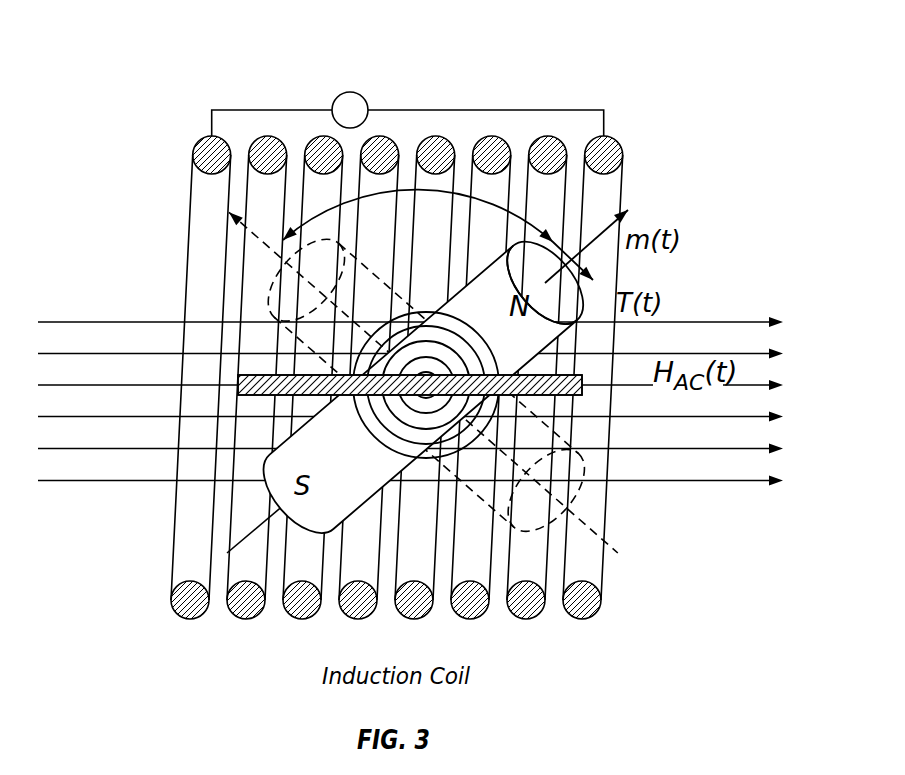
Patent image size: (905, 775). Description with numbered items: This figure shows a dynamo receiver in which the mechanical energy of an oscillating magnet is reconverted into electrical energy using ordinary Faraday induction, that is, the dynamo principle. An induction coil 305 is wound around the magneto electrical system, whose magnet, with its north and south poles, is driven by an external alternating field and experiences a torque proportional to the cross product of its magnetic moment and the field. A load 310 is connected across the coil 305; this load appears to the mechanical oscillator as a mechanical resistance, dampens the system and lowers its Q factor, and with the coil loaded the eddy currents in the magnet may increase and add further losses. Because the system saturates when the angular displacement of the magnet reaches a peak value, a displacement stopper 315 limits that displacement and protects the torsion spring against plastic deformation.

The induction coil 305 is at (182, 545).
The load 310 is at (350, 92).
The displacement stopper 315 is at (253, 375).